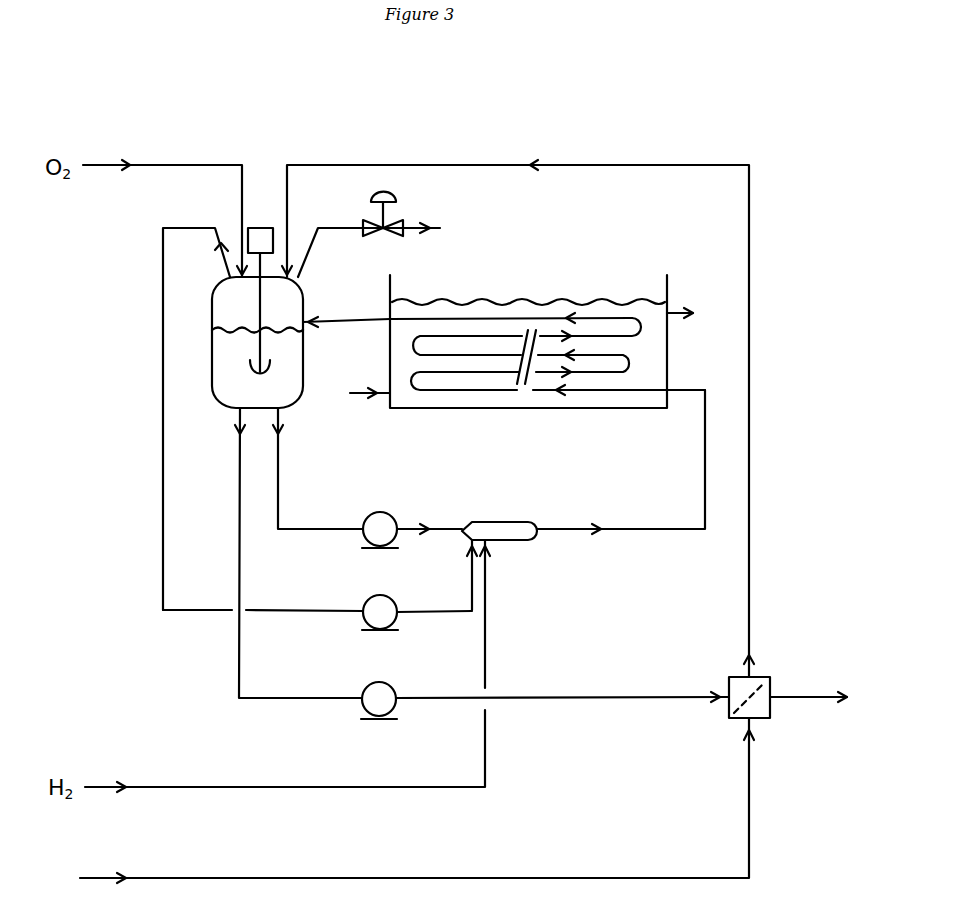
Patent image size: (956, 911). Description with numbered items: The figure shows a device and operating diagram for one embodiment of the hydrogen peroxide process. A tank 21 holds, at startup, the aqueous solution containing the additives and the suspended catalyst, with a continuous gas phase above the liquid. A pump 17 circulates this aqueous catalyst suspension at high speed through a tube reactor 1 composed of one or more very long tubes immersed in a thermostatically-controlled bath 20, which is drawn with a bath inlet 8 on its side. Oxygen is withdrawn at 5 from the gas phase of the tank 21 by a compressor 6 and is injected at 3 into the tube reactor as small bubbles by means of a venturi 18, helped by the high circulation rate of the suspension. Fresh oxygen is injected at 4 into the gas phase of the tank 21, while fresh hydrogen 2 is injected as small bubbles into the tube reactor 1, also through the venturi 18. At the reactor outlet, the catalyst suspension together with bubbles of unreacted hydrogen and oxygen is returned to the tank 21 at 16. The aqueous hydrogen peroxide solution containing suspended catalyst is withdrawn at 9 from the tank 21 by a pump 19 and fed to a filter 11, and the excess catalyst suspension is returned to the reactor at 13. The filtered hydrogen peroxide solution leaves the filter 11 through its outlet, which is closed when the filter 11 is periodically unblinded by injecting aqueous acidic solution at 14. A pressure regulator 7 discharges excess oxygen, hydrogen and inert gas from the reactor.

The tube reactor 1 is at (558, 356).
The fresh hydrogen 2 is at (297, 666).
The oxygen injection point 3 is at (458, 575).
The fresh oxygen injection point 4 is at (165, 208).
The oxygen withdrawal point 5 is at (196, 419).
The compressor 6 is at (317, 605).
The pressure regulator 7 is at (369, 234).
The coolant inlet 8 is at (370, 381).
The hydrogen peroxide solution withdrawal point 9 is at (283, 553).
The filter 11 is at (734, 685).
The catalyst suspension return 13 is at (518, 408).
The aqueous acidic solution injection point 14 is at (430, 800).
The reactor return point 16 is at (467, 309).
The pump 17 is at (402, 520).
The venturi 18 is at (583, 465).
The pump 19 is at (530, 695).
The thermostatically-controlled bath 20 is at (541, 340).
The tank 21 is at (271, 318).